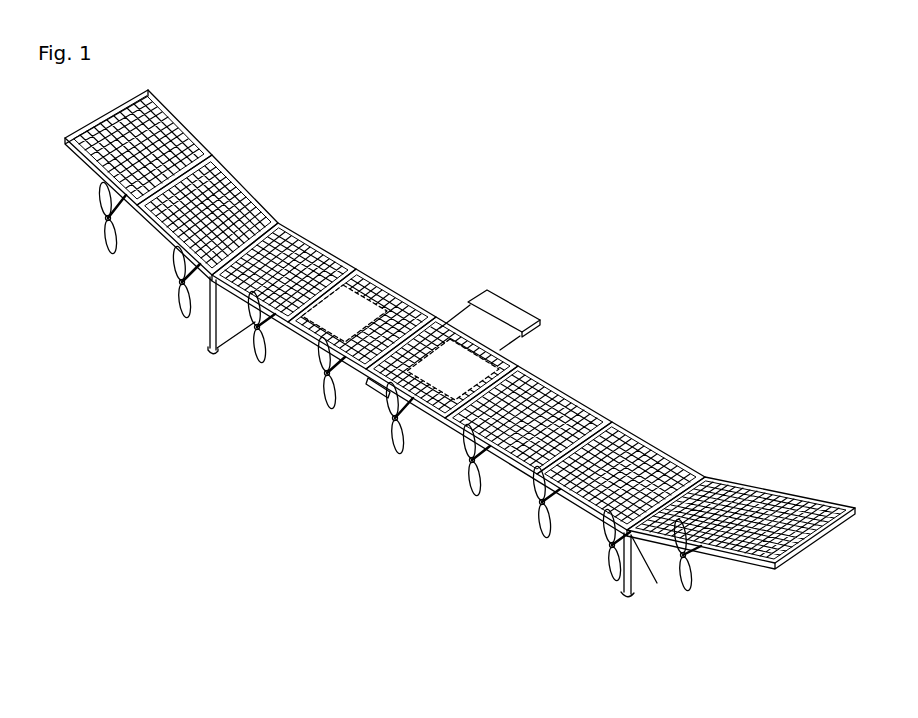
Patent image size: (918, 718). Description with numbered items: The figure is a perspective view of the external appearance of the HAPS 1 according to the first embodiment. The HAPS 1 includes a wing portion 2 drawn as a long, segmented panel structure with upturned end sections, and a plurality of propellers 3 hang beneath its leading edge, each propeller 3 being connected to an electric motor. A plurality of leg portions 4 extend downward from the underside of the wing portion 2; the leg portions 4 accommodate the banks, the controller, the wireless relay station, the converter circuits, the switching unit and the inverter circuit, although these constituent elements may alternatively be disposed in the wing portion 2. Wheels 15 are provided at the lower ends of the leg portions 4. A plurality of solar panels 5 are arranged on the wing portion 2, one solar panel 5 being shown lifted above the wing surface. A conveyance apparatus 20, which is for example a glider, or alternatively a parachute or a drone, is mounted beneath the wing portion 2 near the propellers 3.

The HAPS 1 is at (199, 545).
The wing portion 2 is at (798, 552).
The propeller 3 is at (471, 467).
The leg portion 4 is at (210, 325).
The solar panel 5 is at (510, 356).
The wheel 15 is at (218, 354).
The conveyance apparatus 20 is at (387, 384).